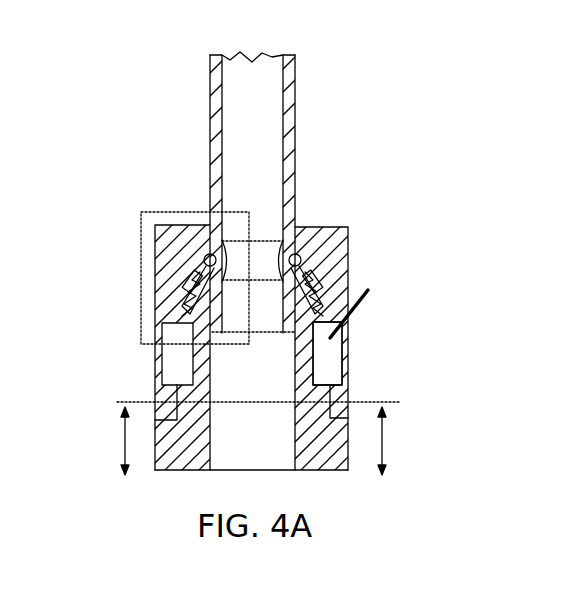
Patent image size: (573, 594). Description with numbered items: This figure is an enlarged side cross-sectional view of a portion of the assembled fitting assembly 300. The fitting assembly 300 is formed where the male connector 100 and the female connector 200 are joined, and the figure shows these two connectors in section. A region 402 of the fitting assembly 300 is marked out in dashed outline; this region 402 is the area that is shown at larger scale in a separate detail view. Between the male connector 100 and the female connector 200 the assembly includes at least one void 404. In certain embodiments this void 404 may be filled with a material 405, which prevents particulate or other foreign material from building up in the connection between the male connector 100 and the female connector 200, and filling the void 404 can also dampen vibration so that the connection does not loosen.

The fitting assembly 300 is at (140, 86).
The female connector 200 is at (328, 240).
The region 402 is at (153, 212).
The material 405 is at (375, 306).
The void 404 is at (328, 370).
The male connector 100 is at (165, 468).